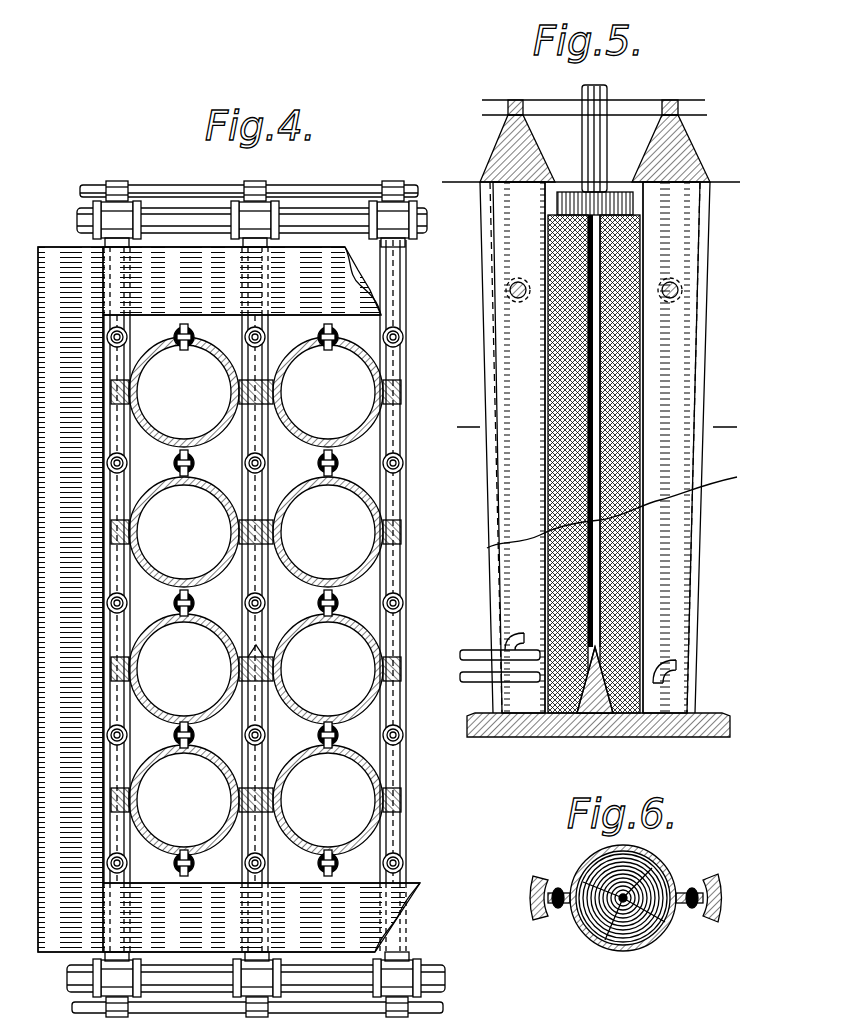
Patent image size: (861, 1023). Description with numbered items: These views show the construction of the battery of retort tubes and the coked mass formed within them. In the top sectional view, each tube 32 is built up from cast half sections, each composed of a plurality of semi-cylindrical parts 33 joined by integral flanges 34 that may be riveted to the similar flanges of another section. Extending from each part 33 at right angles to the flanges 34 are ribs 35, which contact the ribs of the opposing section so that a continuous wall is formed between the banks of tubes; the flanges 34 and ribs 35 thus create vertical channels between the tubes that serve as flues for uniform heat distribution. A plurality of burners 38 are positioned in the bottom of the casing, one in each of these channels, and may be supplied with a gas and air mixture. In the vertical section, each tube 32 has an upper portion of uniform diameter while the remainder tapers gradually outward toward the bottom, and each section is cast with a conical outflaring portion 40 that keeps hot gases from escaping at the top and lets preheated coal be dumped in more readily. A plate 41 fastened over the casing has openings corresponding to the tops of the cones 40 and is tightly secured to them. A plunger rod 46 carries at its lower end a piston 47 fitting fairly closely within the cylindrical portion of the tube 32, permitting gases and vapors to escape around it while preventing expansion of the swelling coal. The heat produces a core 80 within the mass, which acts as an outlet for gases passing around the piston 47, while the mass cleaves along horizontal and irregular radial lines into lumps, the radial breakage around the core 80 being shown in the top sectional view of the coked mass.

In FIG. 4, the retort tube 32 is at (385, 642).
In FIG. 6, the retort tube 32 is at (667, 938).
In FIG. 4, the semi-cylindrical part 33 is at (165, 491).
In FIG. 6, the semi-cylindrical part 33 is at (586, 862).
In FIG. 4, the flange 34 is at (196, 463).
In FIG. 5, the flange 34 is at (500, 303).
In FIG. 6, the flange 34 is at (691, 885).
In FIG. 4, the rib 35 is at (123, 657).
In FIG. 4, the burner 38 is at (407, 447).
In FIG. 5, the burner 38 is at (470, 682).
In FIG. 5, the conical outflaring portion 40 is at (651, 143).
In FIG. 5, the plate 41 is at (672, 103).
In FIG. 5, the plunger rod 46 is at (607, 125).
In FIG. 5, the piston 47 is at (633, 210).
In FIG. 5, the core 80 is at (627, 373).
In FIG. 6, the core 80 is at (606, 905).